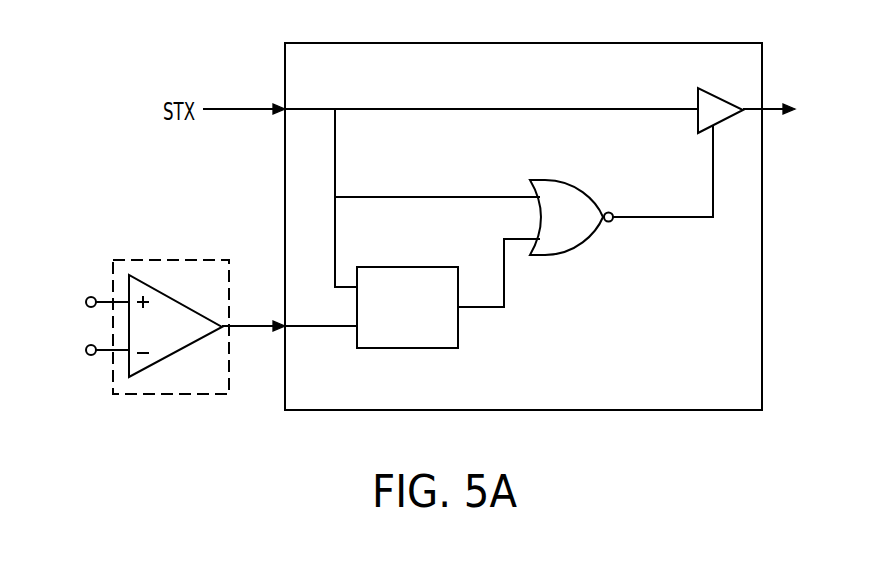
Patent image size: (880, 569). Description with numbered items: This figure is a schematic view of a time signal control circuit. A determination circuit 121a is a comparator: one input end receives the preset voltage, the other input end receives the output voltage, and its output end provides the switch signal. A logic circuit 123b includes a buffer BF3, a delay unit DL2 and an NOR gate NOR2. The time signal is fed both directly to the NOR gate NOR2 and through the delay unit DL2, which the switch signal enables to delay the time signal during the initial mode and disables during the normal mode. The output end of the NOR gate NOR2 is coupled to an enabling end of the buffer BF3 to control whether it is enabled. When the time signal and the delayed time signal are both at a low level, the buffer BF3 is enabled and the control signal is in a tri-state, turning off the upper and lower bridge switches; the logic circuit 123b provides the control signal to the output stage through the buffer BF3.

The logic circuit 123b is at (557, 43).
The determination circuit 121a is at (160, 259).
The buffer BF3 is at (722, 122).
The NOR gate NOR2 is at (566, 256).
The delay unit DL2 is at (410, 348).